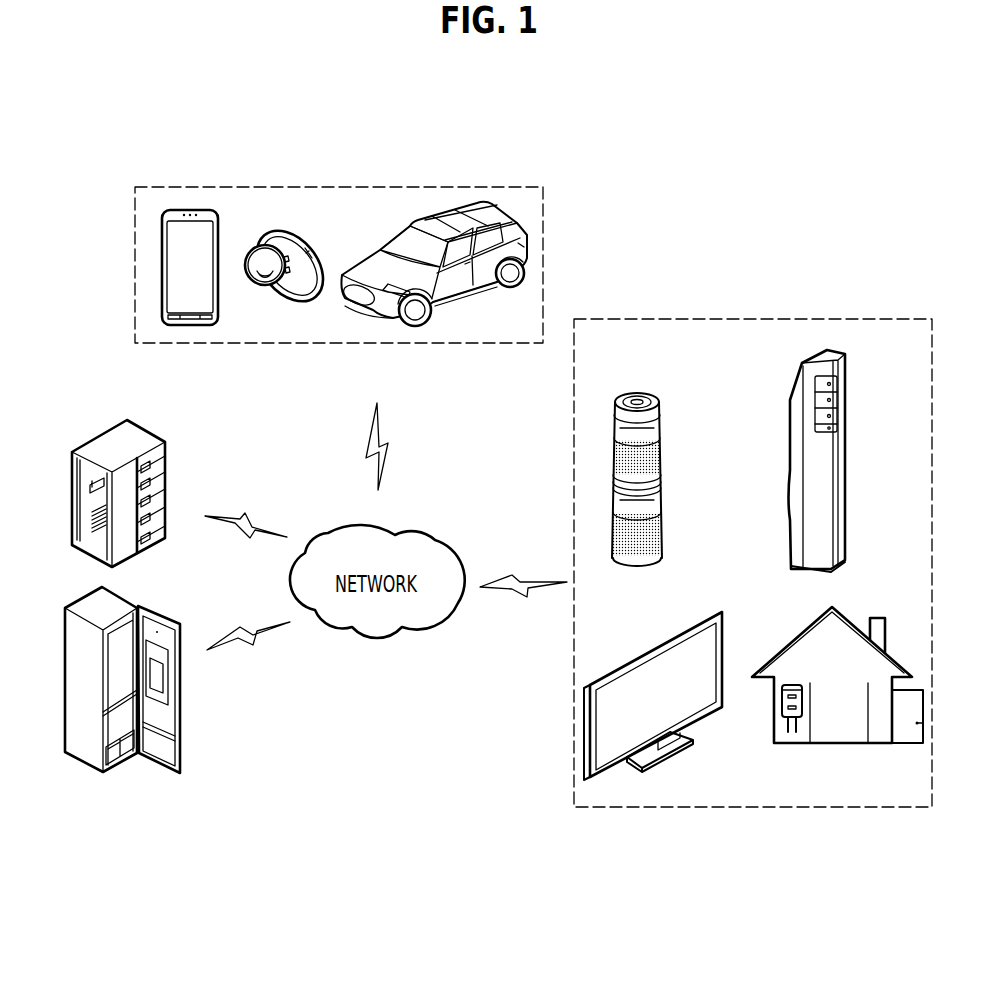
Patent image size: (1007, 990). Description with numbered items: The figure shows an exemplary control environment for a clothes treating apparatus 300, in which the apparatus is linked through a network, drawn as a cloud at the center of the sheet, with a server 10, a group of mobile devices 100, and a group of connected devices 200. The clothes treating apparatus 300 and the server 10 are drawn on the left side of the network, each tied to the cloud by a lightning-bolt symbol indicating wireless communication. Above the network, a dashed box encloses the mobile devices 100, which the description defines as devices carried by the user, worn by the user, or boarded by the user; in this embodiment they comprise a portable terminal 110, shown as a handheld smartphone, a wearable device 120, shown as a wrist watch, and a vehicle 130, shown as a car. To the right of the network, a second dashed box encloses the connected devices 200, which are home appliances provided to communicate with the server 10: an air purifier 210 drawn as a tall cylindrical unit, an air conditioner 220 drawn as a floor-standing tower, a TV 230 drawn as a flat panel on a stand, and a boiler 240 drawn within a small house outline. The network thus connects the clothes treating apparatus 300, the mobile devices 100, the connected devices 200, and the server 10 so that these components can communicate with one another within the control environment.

The server 10 is at (93, 453).
The mobile devices 100 is at (358, 185).
The portable terminal 110 is at (190, 208).
The wearable device 120 is at (277, 222).
The vehicle 130 is at (450, 202).
The connected devices 200 is at (828, 317).
The air purifier 210 is at (652, 387).
The air conditioner 220 is at (838, 440).
The TV 230 is at (680, 628).
The boiler 240 is at (803, 702).
The clothes treating apparatus 300 is at (85, 767).